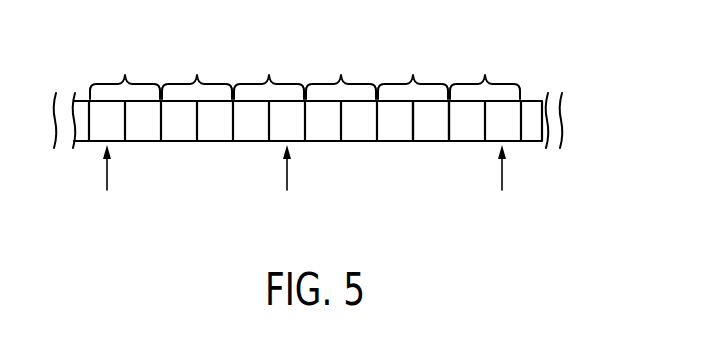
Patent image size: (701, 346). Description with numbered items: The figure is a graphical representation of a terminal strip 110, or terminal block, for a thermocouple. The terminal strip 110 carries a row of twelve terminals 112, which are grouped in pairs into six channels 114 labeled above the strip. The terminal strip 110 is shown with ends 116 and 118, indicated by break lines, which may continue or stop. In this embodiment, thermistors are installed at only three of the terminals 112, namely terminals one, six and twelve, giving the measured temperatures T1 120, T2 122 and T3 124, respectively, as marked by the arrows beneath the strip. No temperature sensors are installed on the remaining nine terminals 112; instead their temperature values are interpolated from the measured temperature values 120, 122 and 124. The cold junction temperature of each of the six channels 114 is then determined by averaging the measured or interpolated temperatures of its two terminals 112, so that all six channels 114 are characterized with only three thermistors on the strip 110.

The terminal strip 110 is at (530, 57).
The terminals 112 is at (430, 133).
The channels 114 is at (127, 43).
The end 116 is at (63, 145).
The end 118 is at (548, 143).
The temperature T1 120 is at (122, 218).
The temperature T2 122 is at (303, 217).
The temperature T3 124 is at (517, 222).